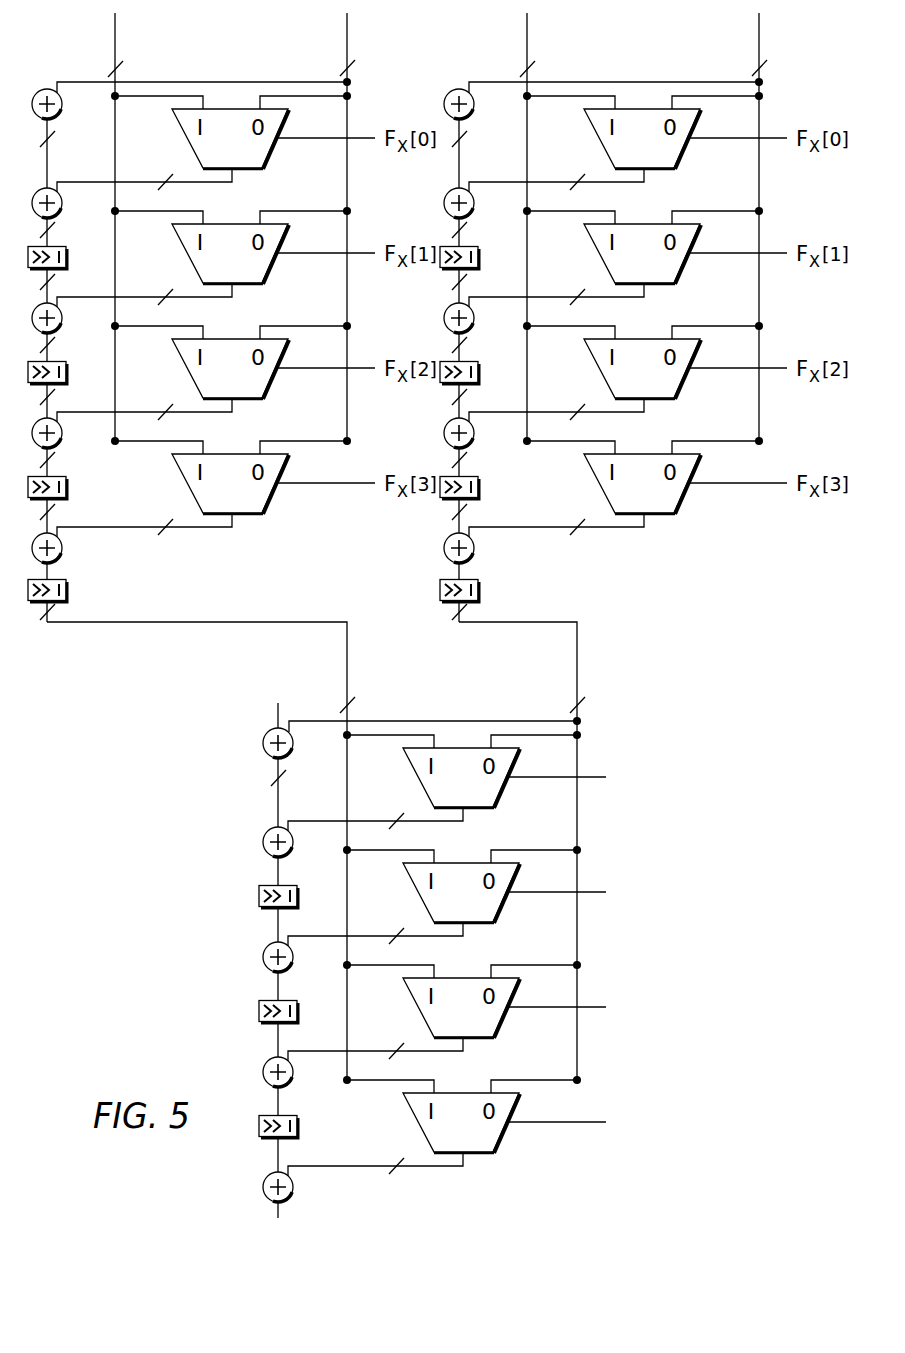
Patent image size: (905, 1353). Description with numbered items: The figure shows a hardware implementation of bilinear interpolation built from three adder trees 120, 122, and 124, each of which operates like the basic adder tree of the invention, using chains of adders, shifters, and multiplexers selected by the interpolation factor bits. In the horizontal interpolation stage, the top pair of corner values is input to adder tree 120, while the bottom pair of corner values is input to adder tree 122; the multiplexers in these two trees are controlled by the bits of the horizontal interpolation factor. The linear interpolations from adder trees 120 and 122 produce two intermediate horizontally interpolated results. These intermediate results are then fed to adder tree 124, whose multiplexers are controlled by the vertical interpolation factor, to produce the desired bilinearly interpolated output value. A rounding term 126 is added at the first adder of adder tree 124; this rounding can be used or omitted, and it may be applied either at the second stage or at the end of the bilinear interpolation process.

The adder tree 120 is at (72, 62).
The adder tree 122 is at (497, 64).
The adder tree 124 is at (163, 788).
The rounding 126 is at (241, 688).